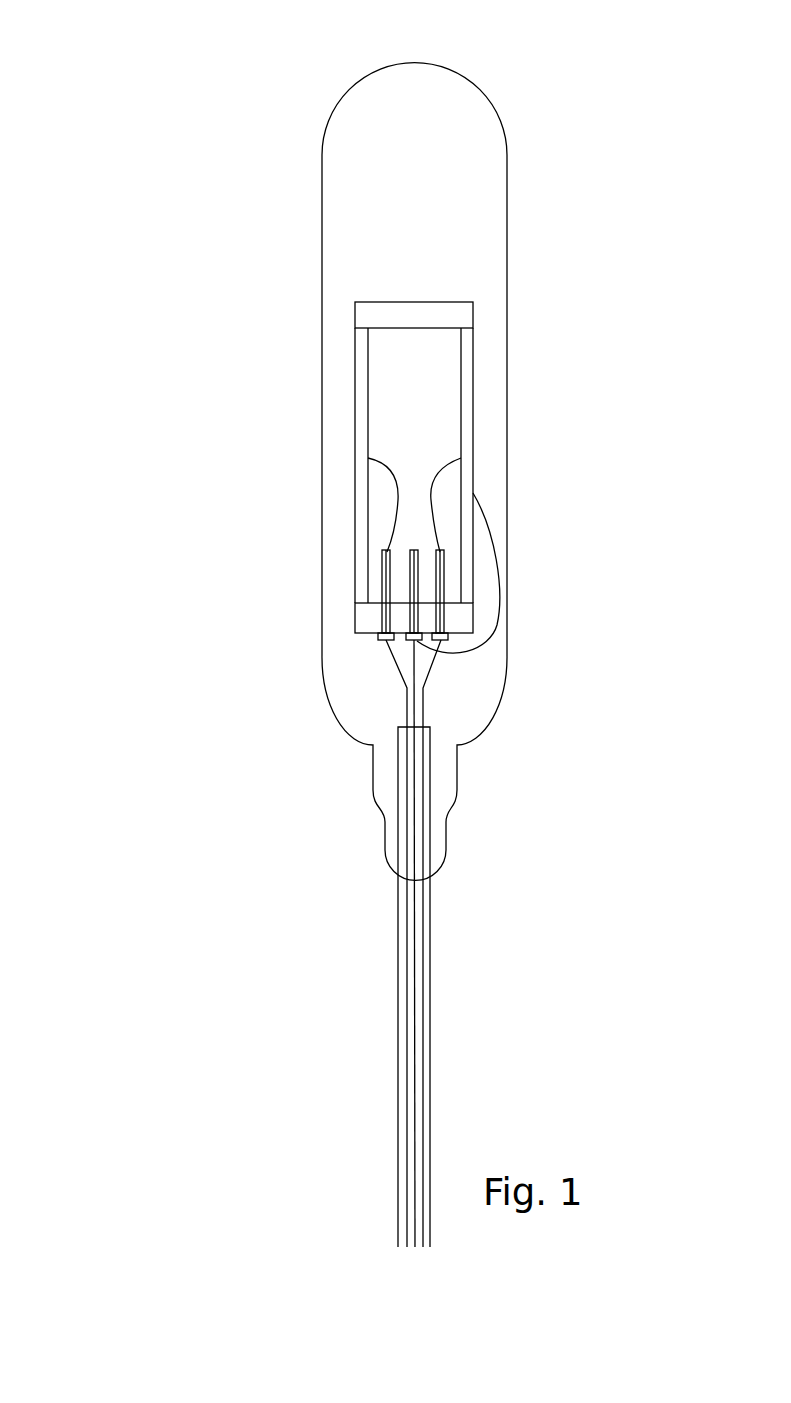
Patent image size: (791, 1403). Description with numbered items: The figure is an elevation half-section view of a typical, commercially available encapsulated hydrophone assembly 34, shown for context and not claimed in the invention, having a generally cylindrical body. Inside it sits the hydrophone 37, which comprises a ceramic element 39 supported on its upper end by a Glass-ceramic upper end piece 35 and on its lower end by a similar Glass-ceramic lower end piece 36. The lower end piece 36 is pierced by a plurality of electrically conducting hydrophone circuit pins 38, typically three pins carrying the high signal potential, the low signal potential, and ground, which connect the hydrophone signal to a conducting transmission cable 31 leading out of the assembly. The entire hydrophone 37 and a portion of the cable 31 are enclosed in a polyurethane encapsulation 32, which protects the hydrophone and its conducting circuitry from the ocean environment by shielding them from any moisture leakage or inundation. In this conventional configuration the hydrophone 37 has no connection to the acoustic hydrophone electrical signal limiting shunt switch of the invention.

The hydrophone signal conducting cable 31 is at (427, 1007).
The polyurethane encapsulation 32 is at (493, 103).
The encapsulated hydrophone assembly 34 is at (223, 163).
The upper end piece 35 is at (437, 299).
The lower end piece 36 is at (355, 617).
The hydrophone 37 is at (372, 228).
The hydrophone circuit pins 38 is at (378, 645).
The ceramic element 39 is at (355, 375).